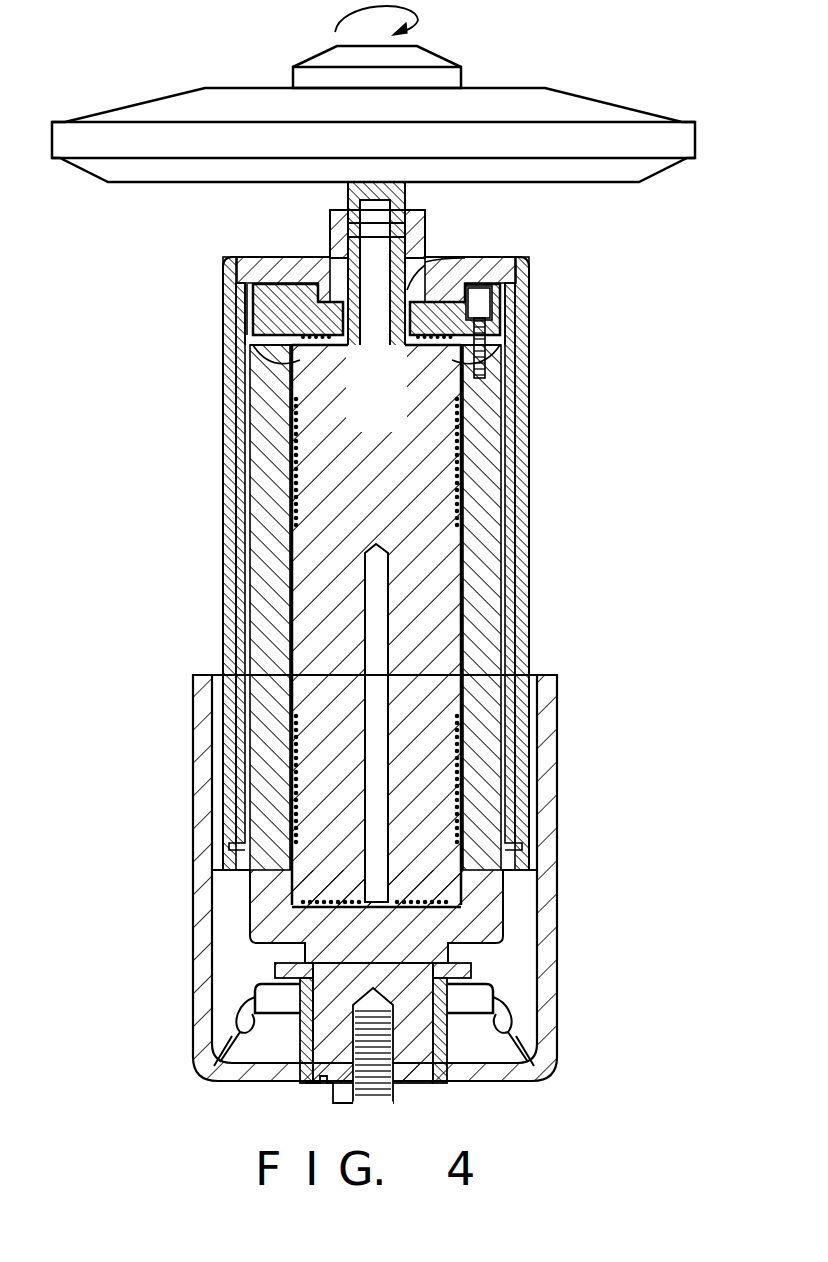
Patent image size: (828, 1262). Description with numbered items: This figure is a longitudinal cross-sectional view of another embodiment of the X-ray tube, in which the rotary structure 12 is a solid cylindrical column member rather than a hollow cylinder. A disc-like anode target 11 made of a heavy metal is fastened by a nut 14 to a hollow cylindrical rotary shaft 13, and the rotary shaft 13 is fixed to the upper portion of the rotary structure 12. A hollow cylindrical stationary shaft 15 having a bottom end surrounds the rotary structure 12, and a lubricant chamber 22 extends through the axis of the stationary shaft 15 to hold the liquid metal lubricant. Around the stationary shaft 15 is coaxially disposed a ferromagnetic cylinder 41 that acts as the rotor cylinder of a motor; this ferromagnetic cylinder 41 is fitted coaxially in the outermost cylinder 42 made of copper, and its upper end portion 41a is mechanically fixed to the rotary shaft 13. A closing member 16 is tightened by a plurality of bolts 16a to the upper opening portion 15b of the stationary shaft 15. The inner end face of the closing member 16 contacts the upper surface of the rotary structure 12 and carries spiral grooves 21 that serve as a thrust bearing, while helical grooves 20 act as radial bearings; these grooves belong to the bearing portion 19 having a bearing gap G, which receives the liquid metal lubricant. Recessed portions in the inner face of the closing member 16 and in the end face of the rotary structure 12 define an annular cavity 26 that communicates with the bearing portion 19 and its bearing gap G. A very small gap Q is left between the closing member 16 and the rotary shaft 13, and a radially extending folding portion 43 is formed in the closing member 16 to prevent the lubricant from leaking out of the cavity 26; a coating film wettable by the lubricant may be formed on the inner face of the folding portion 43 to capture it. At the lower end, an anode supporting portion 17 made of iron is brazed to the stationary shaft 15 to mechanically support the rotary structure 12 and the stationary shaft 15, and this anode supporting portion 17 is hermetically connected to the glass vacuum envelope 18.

The anode target 11 is at (565, 110).
The nut 14 is at (313, 73).
The rotary shaft 13 is at (398, 192).
The upper end portion of the ferromagnetic cylinder 41a is at (337, 246).
The stationary shaft 15 is at (487, 495).
The ferromagnetic cylinder 41 is at (223, 463).
The outermost cylinder 42 is at (223, 517).
The rotary structure 12 is at (433, 437).
The lubricant chamber 22 is at (375, 643).
The closing member 16 is at (263, 303).
The bolts 16a is at (500, 310).
The annular cavity 26 is at (413, 350).
The folding portion 43 is at (493, 260).
The very small gap Q is at (407, 290).
The upper opening portion of the stationary shaft 15b is at (492, 360).
The spiral grooves 21 is at (290, 345).
The bearing gap G is at (290, 360).
The helical grooves 20 is at (292, 437).
The bearing portion 19 is at (463, 710).
The vacuum envelope 18 is at (553, 961).
The anode supporting portion 17 is at (425, 1040).